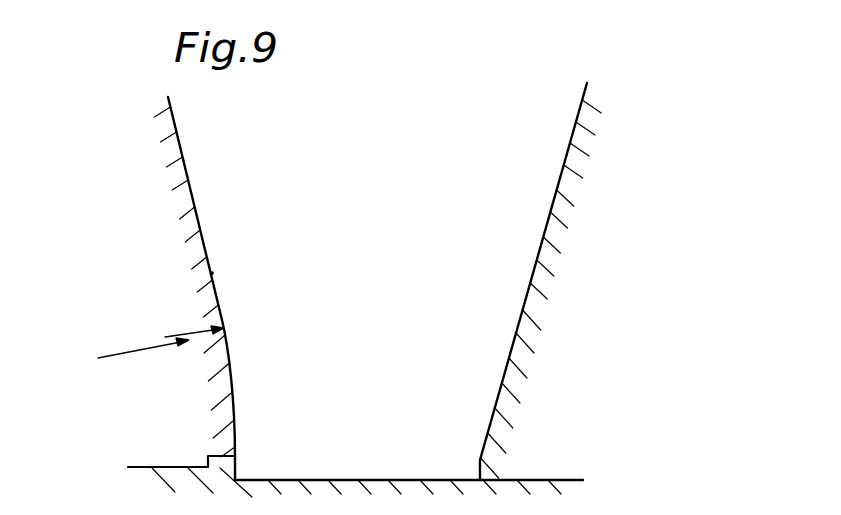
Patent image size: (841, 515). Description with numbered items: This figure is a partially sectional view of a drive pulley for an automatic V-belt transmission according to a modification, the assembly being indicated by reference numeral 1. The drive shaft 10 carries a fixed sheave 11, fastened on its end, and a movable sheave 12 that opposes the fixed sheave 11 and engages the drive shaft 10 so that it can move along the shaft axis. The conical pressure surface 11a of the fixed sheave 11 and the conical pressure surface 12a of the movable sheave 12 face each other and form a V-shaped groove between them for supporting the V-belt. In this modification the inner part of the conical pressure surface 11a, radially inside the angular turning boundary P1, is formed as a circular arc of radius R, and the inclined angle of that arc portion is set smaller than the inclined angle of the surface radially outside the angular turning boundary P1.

The forging die assembly 1 is at (633, 128).
The drive shaft 10 is at (543, 480).
The fixed sheave 11 is at (176, 188).
The conical pressure surface 11a is at (195, 202).
The movable sheave 12 is at (562, 202).
The conical pressure surface 12a is at (543, 223).
The angular turning boundary P1 is at (213, 273).
The radius of curved portion R is at (168, 348).